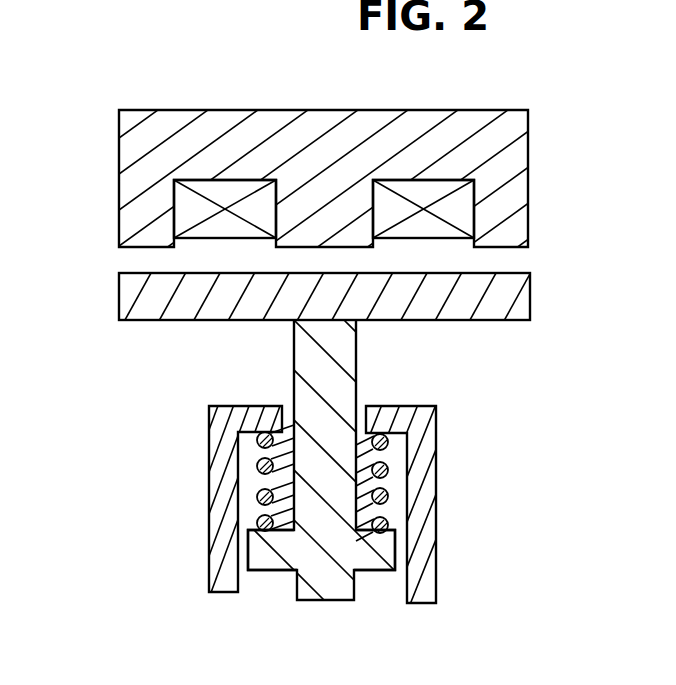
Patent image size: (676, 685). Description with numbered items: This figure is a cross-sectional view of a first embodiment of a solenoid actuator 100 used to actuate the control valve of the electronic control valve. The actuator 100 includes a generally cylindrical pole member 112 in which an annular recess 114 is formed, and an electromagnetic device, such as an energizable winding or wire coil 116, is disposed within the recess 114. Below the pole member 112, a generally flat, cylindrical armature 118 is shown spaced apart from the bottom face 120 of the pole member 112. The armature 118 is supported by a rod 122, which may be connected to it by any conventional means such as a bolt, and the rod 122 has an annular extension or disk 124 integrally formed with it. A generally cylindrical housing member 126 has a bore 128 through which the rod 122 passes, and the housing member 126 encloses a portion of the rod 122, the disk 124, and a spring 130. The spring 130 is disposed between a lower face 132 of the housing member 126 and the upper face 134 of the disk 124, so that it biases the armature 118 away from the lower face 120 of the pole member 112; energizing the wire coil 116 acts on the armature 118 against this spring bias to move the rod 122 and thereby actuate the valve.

The solenoid actuator 100 is at (150, 88).
The pole member 112 is at (460, 110).
The annular recess 114 is at (182, 249).
The wire coil 116 is at (207, 240).
The armature 118 is at (465, 320).
The bottom face 120 is at (350, 248).
The rod 122 is at (358, 352).
The disk 124 is at (263, 571).
The housing member 126 is at (437, 527).
The bore 128 is at (290, 418).
The spring 130 is at (262, 463).
The lower face 132 is at (395, 436).
The upper face 134 is at (390, 527).